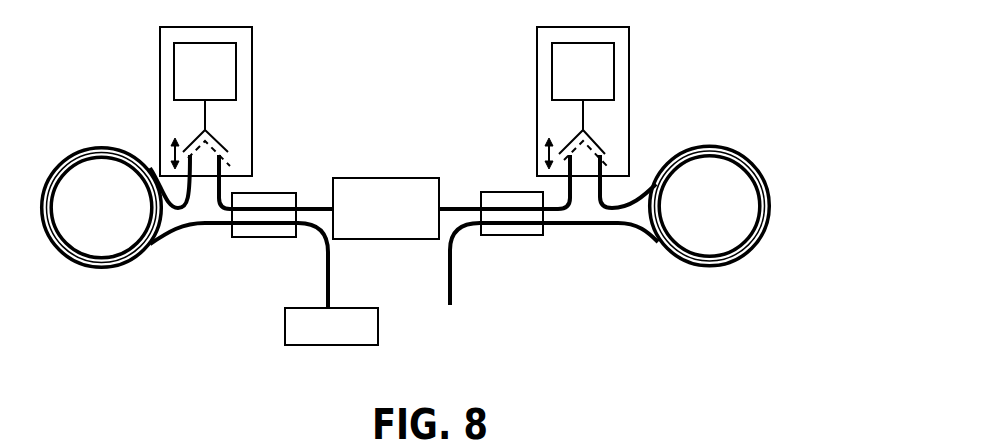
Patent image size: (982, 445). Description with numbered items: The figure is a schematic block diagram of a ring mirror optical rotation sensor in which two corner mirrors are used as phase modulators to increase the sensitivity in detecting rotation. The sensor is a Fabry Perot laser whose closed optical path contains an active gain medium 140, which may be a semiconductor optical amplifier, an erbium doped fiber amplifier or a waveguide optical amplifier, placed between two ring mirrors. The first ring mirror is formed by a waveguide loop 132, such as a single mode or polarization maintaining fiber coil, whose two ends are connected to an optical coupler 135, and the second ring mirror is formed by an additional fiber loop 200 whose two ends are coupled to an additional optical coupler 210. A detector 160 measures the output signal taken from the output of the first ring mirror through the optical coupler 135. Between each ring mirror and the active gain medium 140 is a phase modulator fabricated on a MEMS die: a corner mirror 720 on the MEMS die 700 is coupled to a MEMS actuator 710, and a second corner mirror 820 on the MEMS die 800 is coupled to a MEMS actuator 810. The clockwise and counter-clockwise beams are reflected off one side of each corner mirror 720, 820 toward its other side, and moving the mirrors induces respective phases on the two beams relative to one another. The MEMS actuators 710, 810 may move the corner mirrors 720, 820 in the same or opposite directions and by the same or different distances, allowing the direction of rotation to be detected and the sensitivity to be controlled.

The waveguide loop 132 is at (82, 147).
The optical coupler 135 is at (249, 193).
The active gain medium 140 is at (382, 178).
The detector 160 is at (378, 333).
The additional fiber loop 200 is at (732, 146).
The additional optical coupler 210 is at (510, 192).
The MEMS die 700 is at (252, 36).
The MEMS actuator 710 is at (236, 80).
The corner mirror 720 is at (213, 137).
The MEMS die 800 is at (629, 36).
The MEMS actuator 810 is at (614, 80).
The corner mirror 820 is at (596, 137).